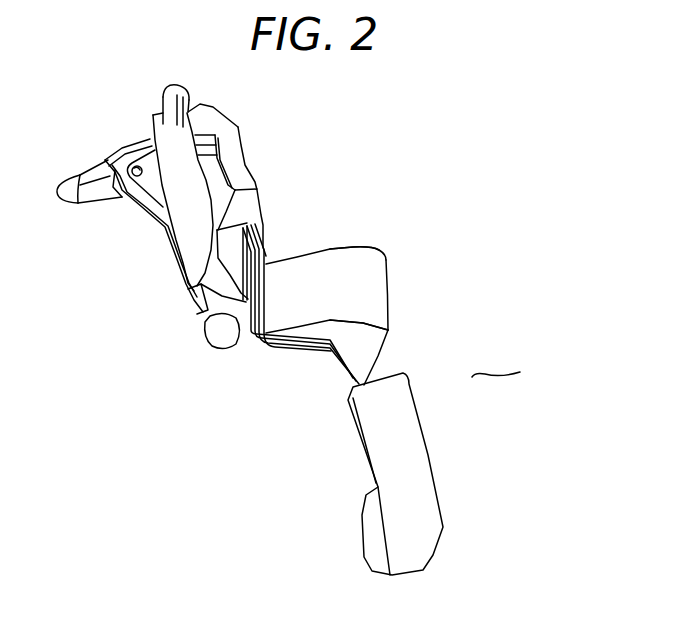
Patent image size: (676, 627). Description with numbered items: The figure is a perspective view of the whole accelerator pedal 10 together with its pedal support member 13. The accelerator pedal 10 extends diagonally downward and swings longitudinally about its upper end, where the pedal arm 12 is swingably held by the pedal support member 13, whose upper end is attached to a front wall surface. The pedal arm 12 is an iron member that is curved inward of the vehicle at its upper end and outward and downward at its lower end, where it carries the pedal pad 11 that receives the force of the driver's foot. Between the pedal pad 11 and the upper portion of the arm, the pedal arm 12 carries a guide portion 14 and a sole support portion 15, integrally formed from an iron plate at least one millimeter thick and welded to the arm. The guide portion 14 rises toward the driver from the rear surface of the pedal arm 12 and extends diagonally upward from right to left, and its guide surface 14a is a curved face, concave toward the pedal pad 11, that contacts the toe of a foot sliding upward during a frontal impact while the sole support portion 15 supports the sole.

The accelerator pedal 10 is at (508, 372).
The pedal pad 11 is at (418, 456).
The pedal arm 12 is at (310, 345).
The pedal support member 13 is at (246, 203).
The guide portion 14 is at (377, 266).
The guide surface 14a is at (348, 261).
The sole support portion 15 is at (370, 343).